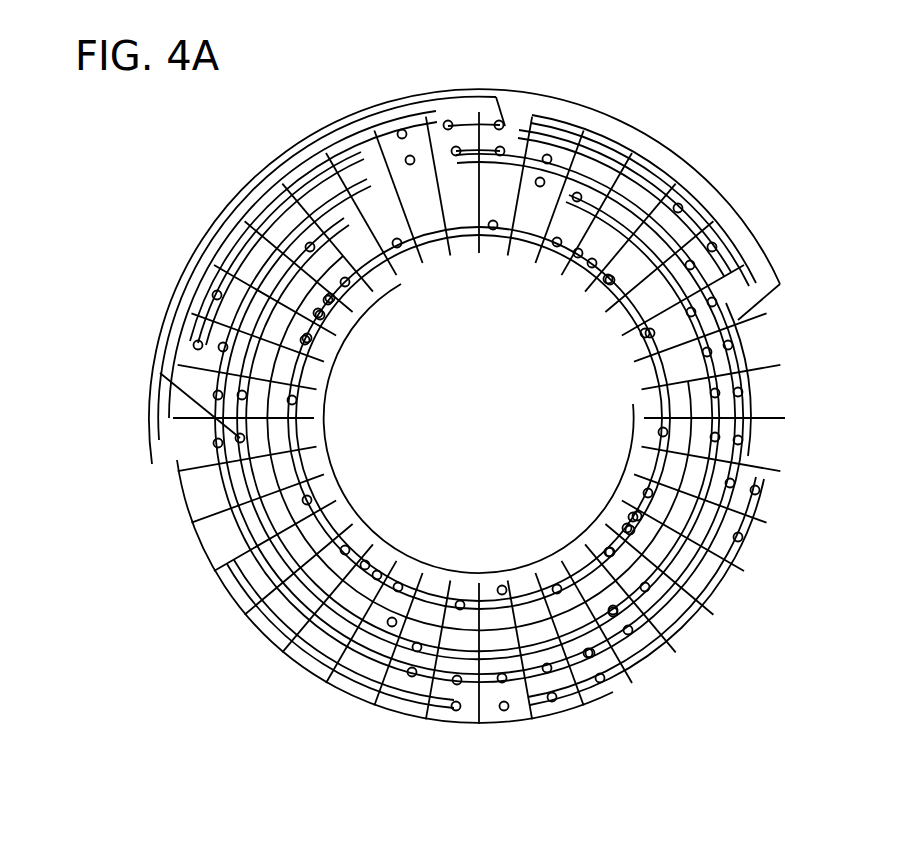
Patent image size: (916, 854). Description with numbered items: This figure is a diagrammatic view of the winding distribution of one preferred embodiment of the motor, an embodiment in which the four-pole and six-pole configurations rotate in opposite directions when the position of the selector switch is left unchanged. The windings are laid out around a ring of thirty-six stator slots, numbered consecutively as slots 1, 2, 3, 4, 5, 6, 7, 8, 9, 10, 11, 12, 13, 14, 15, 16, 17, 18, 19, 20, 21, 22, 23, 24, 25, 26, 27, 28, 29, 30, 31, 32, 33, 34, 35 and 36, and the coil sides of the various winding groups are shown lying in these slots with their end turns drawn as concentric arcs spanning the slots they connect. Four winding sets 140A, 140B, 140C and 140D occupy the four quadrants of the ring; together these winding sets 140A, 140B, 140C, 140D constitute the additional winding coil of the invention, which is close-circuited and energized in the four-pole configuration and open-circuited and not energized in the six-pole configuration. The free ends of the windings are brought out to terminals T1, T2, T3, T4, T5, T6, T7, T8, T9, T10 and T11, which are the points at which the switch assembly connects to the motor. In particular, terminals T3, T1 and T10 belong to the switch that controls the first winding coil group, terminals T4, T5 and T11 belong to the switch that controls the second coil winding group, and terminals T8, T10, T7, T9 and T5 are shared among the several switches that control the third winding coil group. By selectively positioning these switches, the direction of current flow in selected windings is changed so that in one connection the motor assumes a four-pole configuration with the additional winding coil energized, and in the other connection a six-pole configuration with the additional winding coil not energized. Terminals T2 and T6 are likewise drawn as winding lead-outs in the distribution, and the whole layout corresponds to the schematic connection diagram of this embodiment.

The slot 1 is at (738, 392).
The slot 2 is at (735, 446).
The slot 3 is at (726, 498).
The slot 4 is at (709, 536).
The slot 5 is at (687, 572).
The slot 6 is at (657, 605).
The slot 7 is at (624, 632).
The slot 8 is at (580, 654).
The slot 9 is at (540, 669).
The slot 10 is at (500, 675).
The slot 11 is at (443, 674).
The slot 12 is at (398, 665).
The slot 13 is at (359, 650).
The slot 14 is at (319, 623).
The slot 15 is at (288, 596).
The slot 16 is at (258, 561).
The slot 17 is at (236, 520).
The slot 18 is at (221, 478).
The slot 19 is at (215, 434).
The slot 20 is at (216, 376).
The slot 21 is at (225, 331).
The slot 22 is at (241, 291).
The slot 23 is at (264, 252).
The slot 24 is at (294, 220).
The slot 25 is at (331, 189).
The slot 26 is at (369, 167).
The slot 27 is at (410, 156).
The slot 28 is at (455, 145).
The slot 29 is at (510, 147).
The slot 30 is at (559, 157).
The slot 31 is at (600, 174).
The slot 32 is at (635, 199).
The slot 33 is at (668, 230).
The slot 34 is at (695, 264).
The slot 35 is at (719, 302).
The slot 36 is at (731, 348).
The winding set 140A is at (345, 570).
The winding set 140B is at (745, 430).
The winding set 140C is at (612, 150).
The winding set 140D is at (333, 243).
The terminal T1 is at (714, 248).
The winding terminal T2 is at (498, 586).
The terminal T3 is at (758, 490).
The terminal T4 is at (645, 587).
The terminal T5 is at (392, 622).
The winding terminal T6 is at (238, 440).
The terminal T7 is at (578, 258).
The terminal T8 is at (398, 245).
The terminal T9 is at (295, 398).
The terminal T10 is at (588, 257).
The terminal T11 is at (663, 430).